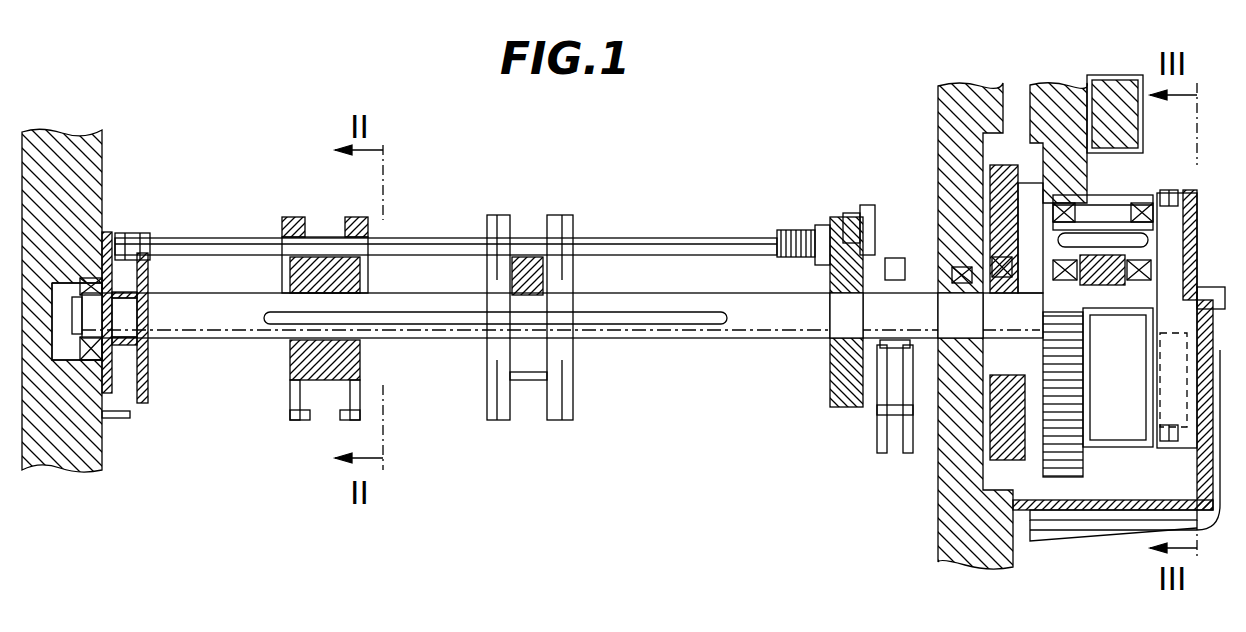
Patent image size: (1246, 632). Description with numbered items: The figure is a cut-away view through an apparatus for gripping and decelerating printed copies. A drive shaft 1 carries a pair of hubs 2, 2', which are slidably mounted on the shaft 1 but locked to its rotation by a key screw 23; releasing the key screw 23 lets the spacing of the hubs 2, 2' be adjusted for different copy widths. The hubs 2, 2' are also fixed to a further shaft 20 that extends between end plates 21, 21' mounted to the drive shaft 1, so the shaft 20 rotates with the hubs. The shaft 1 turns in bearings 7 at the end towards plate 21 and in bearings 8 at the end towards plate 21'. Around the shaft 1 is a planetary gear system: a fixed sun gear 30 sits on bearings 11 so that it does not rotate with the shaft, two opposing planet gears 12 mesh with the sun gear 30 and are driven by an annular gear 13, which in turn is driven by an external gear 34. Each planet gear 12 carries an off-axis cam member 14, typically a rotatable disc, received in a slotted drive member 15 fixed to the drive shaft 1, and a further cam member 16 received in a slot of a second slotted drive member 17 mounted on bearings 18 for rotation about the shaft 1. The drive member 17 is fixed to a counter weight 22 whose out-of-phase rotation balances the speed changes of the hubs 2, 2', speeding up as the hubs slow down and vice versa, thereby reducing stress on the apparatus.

The drive shaft 1 is at (210, 320).
The hub 2 is at (298, 319).
The hub 2' is at (495, 318).
The bearings 7 is at (98, 282).
The bearings 8 is at (963, 393).
The bearings 11 is at (1177, 293).
The planet gear 12 is at (1140, 203).
The annular gear 13 is at (1107, 203).
The cam member 14 is at (1178, 206).
The slotted drive member 15 is at (1167, 372).
The cam member 16 is at (990, 265).
The slotted drive member 17 is at (1000, 205).
The bearings 18 is at (1025, 250).
The shaft 20 is at (221, 250).
The end plate 21 is at (153, 264).
The end plate 21' is at (831, 306).
The counter weight 22 is at (950, 107).
The key screw 23 is at (530, 280).
The sun gear 30 is at (1090, 290).
The external gear 34 is at (1048, 113).